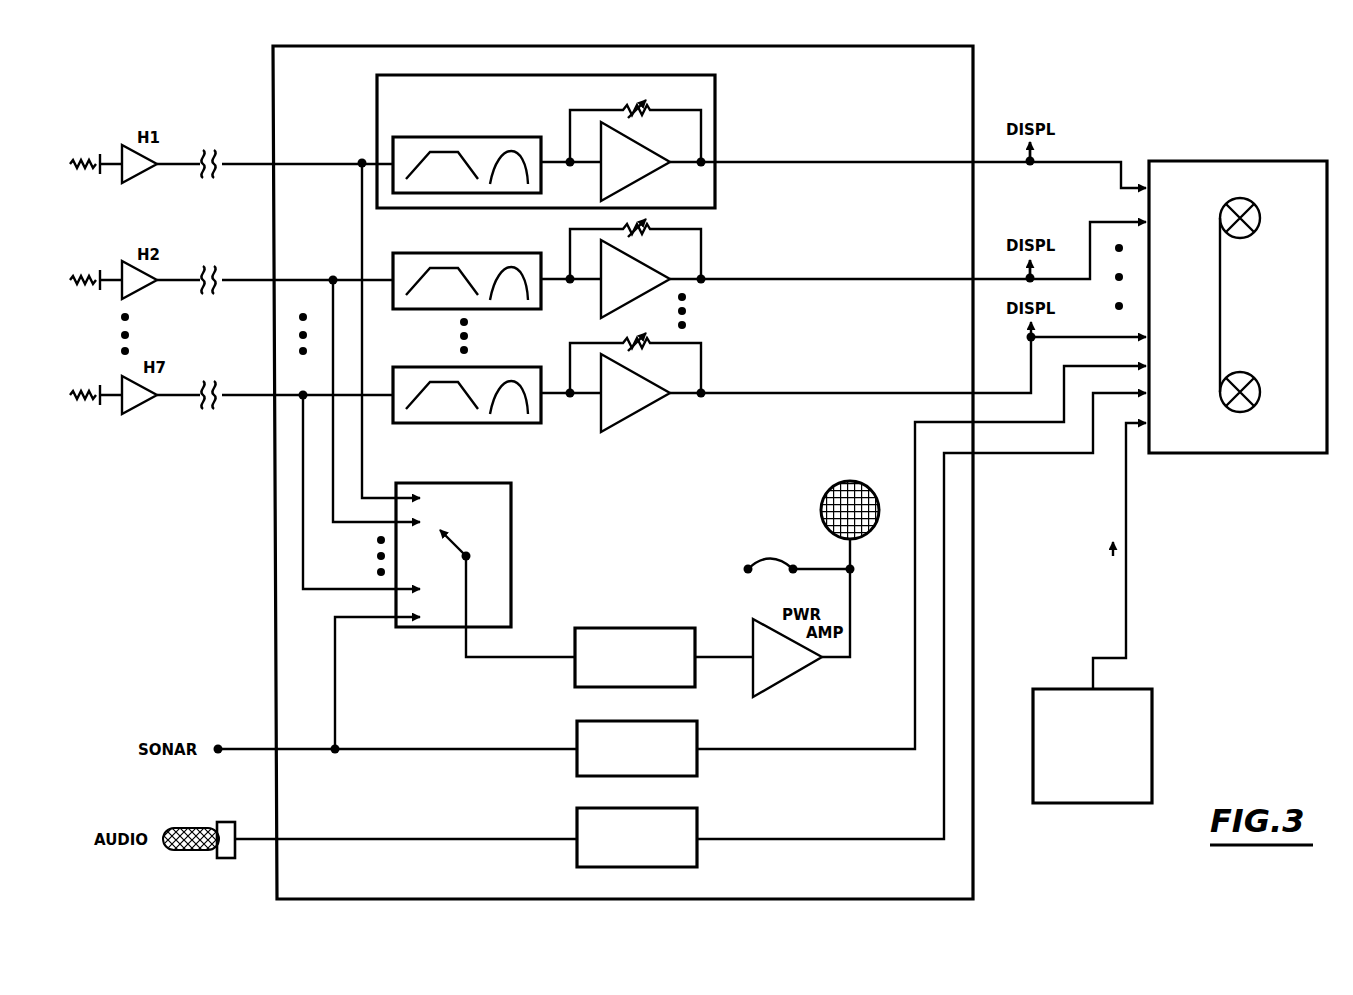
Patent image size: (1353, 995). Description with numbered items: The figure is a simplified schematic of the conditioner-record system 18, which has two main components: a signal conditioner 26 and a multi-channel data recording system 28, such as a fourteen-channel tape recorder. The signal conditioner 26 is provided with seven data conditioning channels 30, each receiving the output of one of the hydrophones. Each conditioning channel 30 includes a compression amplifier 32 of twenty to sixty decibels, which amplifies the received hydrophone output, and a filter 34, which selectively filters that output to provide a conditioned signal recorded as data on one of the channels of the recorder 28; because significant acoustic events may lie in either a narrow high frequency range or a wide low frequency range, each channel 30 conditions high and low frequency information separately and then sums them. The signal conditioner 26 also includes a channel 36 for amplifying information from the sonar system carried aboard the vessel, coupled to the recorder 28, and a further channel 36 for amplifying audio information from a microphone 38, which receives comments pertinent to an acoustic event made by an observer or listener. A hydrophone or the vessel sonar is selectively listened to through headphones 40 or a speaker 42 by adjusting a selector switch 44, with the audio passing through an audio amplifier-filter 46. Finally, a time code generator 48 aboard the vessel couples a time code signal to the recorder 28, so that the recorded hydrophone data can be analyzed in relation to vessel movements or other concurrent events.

The conditioner-record system 18 is at (1064, 96).
The signal conditioner 26 is at (975, 99).
The multi-channel data recording system 28 is at (1312, 161).
The data conditioning channel 30 is at (716, 118).
The compression amplifier 32 is at (628, 171).
The filter 34 is at (534, 136).
The channel 36 is at (648, 758).
The microphone 38 is at (188, 828).
The headphones 40 is at (769, 560).
The speaker 42 is at (824, 497).
The selector switch 44 is at (511, 513).
The audio amplifier-filter 46 is at (696, 632).
The time code generator 48 is at (1152, 752).